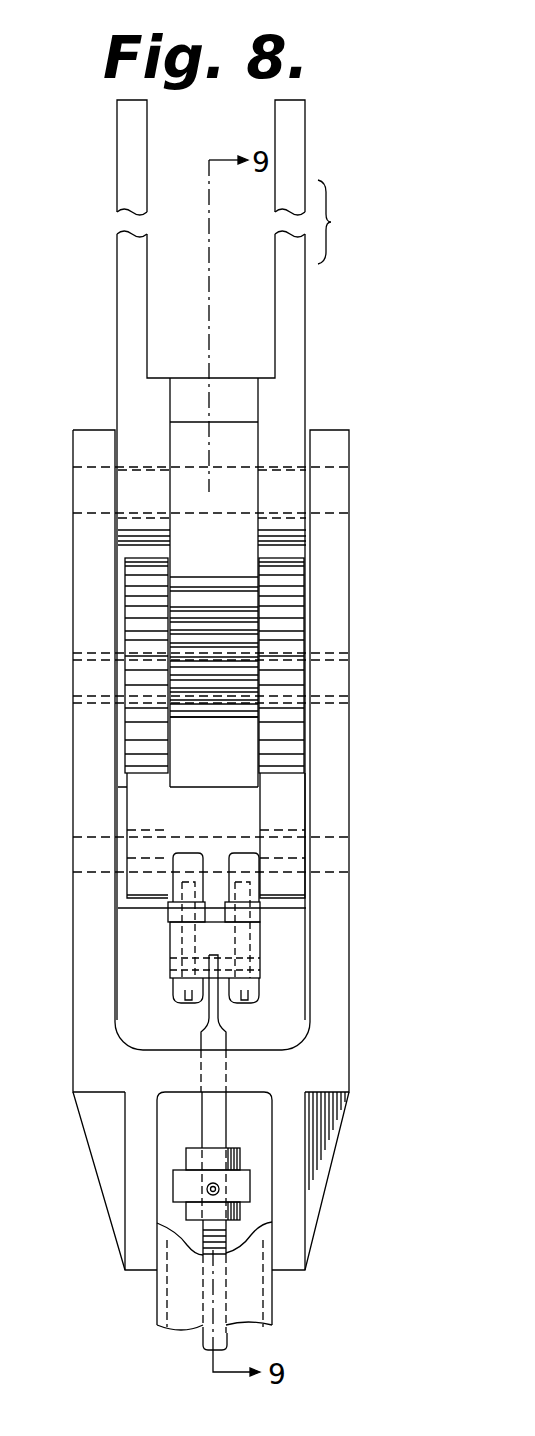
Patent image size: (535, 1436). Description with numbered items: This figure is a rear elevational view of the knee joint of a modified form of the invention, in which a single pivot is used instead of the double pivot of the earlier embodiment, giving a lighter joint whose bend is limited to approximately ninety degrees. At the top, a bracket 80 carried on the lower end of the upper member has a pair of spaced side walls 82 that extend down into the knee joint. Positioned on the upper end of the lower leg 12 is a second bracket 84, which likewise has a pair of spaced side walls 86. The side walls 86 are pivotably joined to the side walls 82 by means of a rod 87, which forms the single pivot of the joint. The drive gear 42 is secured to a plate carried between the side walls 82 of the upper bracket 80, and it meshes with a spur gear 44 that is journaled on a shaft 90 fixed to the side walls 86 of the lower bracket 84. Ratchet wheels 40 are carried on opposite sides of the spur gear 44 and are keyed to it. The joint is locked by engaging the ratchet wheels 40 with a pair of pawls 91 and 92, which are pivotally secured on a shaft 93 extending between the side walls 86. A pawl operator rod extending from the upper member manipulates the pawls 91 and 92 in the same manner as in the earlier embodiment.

The lower leg 12 is at (272, 1302).
The ratchet wheels 40 is at (295, 716).
The drive gear 42 is at (192, 585).
The spur gear 44 is at (208, 705).
The bracket 80 is at (298, 320).
The side walls 82 is at (125, 402).
The bracket 84 is at (325, 1167).
The side walls 86 is at (343, 962).
The rod 87 is at (227, 469).
The shaft 90 is at (330, 660).
The pawl 91 is at (295, 807).
The pawl 92 is at (132, 819).
The shaft 93 is at (327, 838).